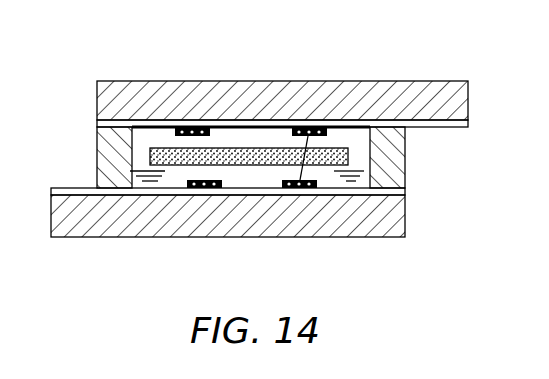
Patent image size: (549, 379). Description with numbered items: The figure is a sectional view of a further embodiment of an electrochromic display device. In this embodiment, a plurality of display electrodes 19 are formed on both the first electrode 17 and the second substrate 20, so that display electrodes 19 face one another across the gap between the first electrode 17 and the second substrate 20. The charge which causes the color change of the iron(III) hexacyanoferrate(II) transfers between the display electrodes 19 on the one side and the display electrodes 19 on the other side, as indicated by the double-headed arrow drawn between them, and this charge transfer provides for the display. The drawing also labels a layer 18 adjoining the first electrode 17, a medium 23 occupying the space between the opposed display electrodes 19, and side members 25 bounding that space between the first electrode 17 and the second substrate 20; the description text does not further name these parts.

The first electrode 17 is at (360, 92).
The thin layer 18 is at (457, 127).
The display electrode 19 is at (192, 128).
The second substrate 20 is at (348, 224).
The liquid 23 is at (360, 180).
The side walls 25 is at (104, 153).